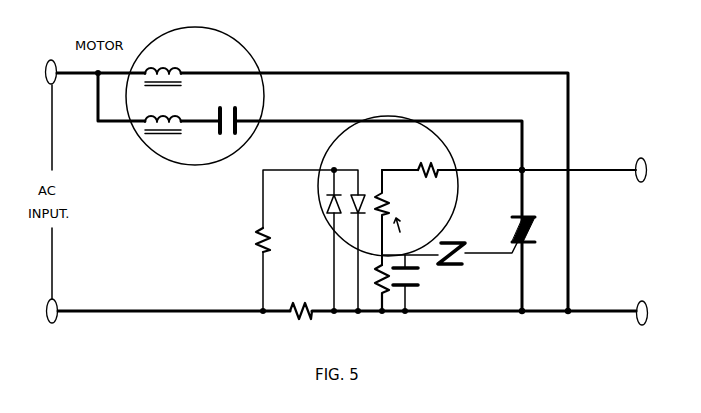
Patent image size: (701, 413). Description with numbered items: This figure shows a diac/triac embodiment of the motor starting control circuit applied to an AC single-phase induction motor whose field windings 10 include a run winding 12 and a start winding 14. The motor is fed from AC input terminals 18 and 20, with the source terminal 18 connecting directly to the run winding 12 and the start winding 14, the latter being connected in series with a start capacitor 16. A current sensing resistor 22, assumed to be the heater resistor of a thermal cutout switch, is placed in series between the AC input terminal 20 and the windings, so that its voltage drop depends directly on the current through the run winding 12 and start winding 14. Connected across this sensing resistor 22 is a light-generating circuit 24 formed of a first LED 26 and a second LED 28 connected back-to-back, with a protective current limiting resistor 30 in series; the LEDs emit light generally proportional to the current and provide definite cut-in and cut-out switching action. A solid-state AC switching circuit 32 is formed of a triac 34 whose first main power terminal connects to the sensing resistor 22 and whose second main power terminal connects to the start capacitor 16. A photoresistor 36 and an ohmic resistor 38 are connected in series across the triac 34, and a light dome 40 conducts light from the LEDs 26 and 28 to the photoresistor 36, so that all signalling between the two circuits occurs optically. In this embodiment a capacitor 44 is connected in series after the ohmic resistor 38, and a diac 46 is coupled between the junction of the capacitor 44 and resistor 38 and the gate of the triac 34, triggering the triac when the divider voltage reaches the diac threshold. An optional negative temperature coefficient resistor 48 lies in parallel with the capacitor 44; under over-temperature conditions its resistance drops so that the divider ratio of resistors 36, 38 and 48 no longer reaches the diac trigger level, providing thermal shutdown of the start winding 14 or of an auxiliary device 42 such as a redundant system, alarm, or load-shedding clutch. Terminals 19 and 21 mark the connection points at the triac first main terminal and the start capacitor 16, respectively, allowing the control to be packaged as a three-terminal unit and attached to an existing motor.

The field windings 10 is at (222, 55).
The run winding 12 is at (180, 64).
The start winding 14 is at (187, 130).
The start capacitor 16 is at (209, 127).
The AC input terminal 18 is at (37, 72).
The terminal 19 is at (655, 313).
The AC input terminal 20 is at (37, 311).
The terminal 21 is at (653, 170).
The current sensing resistor 22 is at (310, 301).
The light-generating circuit 24 is at (310, 223).
The first LED 26 is at (330, 203).
The second LED 28 is at (347, 193).
The current limiting resistor 30 is at (249, 240).
The solid-state AC switching circuit 32 is at (423, 236).
The triac 34 is at (507, 232).
The photoresistor 36 is at (418, 160).
The ohmic resistor 38 is at (387, 203).
The light dome 40 is at (330, 230).
The auxiliary device 42 is at (435, 103).
The capacitor 44 is at (418, 280).
The diac 46 is at (467, 263).
The negative temperature coefficient resistor 48 is at (388, 303).